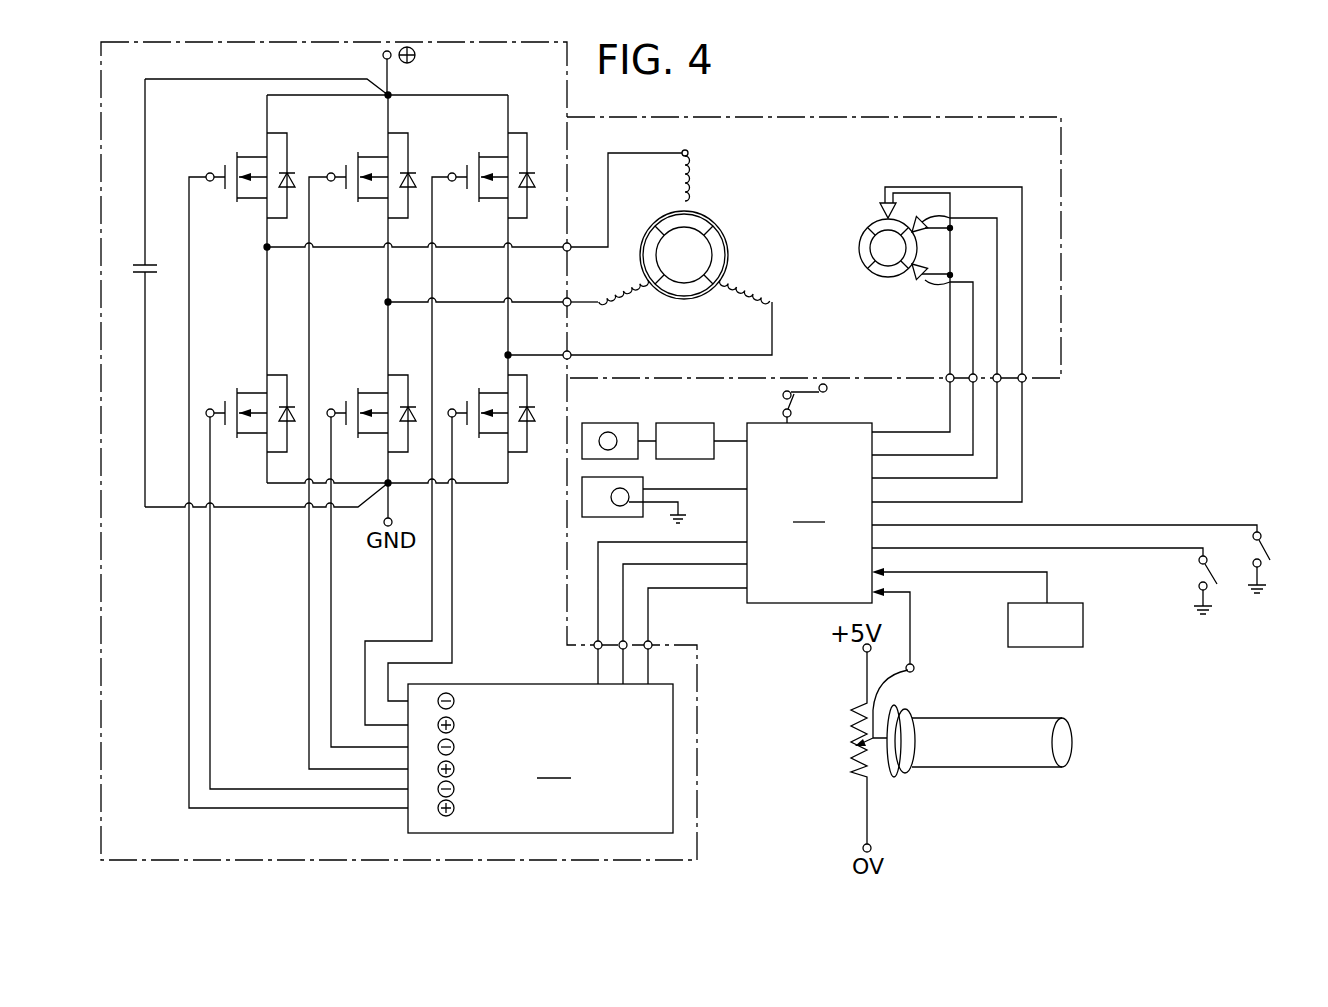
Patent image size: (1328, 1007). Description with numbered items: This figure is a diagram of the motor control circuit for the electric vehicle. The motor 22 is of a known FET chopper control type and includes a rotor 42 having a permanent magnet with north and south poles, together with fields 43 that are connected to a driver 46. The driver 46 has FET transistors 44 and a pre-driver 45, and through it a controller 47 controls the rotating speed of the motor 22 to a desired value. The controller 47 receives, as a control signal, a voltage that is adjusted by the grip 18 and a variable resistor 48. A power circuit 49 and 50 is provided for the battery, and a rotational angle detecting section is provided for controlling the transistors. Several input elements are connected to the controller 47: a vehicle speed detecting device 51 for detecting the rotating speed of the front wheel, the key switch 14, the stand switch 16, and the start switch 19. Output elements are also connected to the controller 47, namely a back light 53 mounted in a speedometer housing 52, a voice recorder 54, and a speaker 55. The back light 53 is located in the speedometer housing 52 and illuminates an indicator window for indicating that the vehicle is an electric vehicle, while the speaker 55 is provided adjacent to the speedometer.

The key switch 14 is at (782, 398).
The stand switch 16 is at (1200, 565).
The grip 18 is at (1024, 722).
The start switch 19 is at (1265, 545).
The motor 22 is at (788, 128).
The rotor 42 is at (728, 229).
The fields 43 is at (692, 170).
The FET transistors 44 is at (228, 197).
The pre-driver 45 is at (540, 758).
The driver 46 is at (107, 174).
The controller 47 is at (815, 513).
The variable resistor 48 is at (840, 712).
The power circuit 49 is at (385, 78).
The power circuit 50 is at (862, 214).
The vehicle speed detecting device 51 is at (1057, 626).
The speedometer housing 52 is at (587, 502).
The back light 53 is at (632, 486).
The voice recorder 54 is at (676, 423).
The speaker 55 is at (595, 423).